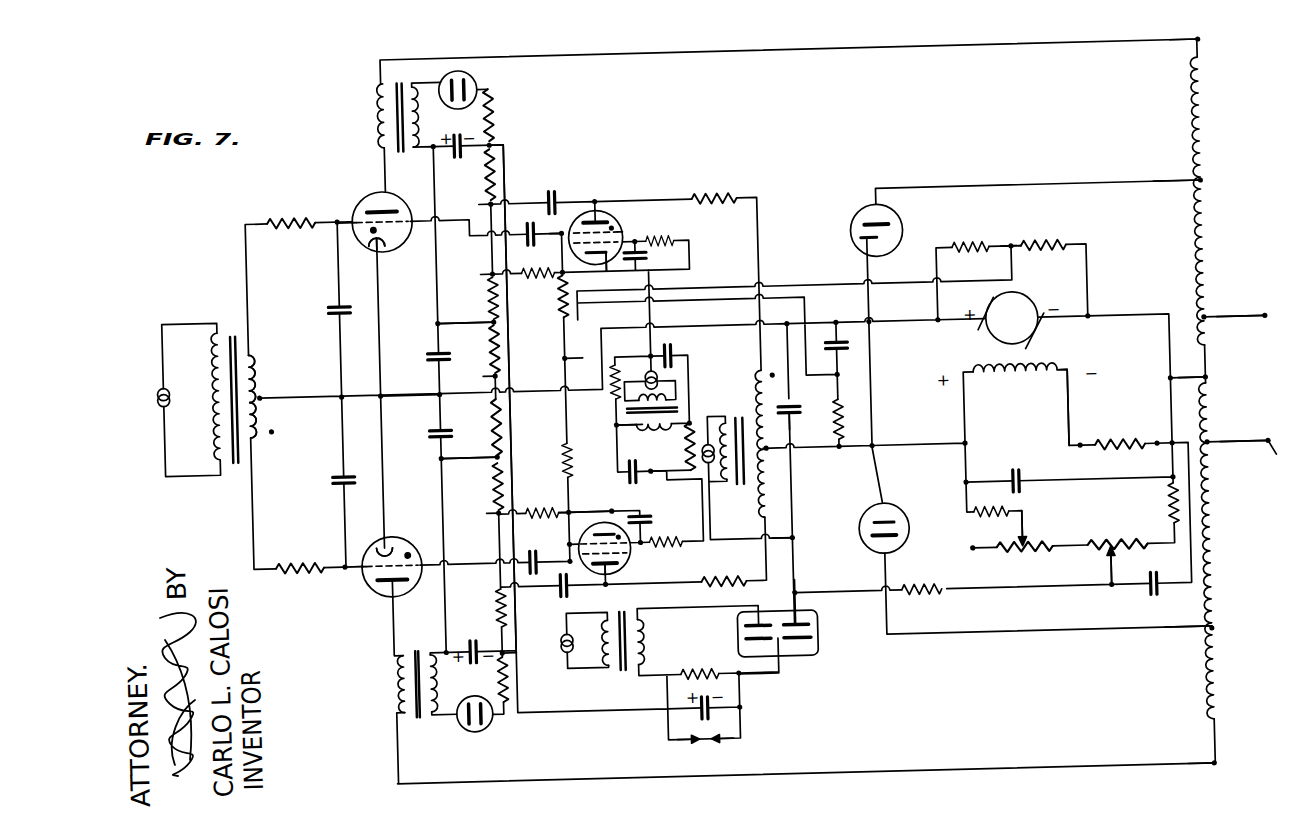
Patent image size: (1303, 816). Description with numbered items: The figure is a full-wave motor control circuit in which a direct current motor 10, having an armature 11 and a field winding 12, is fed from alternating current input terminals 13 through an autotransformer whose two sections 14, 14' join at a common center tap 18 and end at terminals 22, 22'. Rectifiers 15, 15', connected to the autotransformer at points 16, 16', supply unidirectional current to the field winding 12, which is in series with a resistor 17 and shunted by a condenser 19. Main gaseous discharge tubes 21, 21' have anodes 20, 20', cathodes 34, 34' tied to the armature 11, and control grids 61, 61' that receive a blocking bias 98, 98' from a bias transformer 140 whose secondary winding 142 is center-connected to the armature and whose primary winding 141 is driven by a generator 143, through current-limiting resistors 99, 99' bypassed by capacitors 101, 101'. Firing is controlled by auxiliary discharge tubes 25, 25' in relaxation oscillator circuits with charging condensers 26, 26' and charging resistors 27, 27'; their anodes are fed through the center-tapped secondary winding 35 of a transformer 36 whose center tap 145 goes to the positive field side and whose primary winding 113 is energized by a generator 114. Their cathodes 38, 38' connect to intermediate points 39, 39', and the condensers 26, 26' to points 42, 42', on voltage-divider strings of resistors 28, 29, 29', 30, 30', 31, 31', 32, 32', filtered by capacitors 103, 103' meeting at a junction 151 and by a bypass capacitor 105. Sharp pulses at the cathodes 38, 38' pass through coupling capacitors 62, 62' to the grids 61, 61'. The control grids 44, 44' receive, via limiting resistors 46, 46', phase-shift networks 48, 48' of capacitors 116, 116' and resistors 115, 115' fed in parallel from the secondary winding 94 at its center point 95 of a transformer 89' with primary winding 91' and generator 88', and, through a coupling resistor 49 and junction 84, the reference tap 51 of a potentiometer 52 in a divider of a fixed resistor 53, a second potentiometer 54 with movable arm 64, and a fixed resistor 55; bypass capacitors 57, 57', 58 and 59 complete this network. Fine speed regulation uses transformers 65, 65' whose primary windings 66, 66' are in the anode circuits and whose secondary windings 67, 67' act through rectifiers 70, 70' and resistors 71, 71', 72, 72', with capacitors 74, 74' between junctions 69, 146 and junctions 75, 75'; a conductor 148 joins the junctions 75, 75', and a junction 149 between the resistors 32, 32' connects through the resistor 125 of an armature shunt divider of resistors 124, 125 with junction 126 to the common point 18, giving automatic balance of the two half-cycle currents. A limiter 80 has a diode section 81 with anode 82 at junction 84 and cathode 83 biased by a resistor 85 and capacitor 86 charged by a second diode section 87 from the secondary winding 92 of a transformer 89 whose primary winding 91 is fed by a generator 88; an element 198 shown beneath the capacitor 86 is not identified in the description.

The direct current motor 10 is at (1053, 391).
The armature 11 is at (1010, 320).
The field winding 12 is at (1009, 393).
The input terminals 13 is at (1258, 336).
The autotransformer 14 is at (1227, 201).
The autotransformer 14' is at (1231, 550).
The current rectifier 15 is at (888, 208).
The current rectifier 15' is at (889, 517).
The autotransformer point 16 is at (1167, 165).
The autotransformer point 16' is at (1180, 651).
The resistor 17 is at (1100, 459).
The common end 18 is at (1200, 397).
The condenser 19 is at (1008, 490).
The anode 20 is at (380, 196).
The anode 20' is at (389, 583).
The main gaseous discharge tube 21 is at (335, 202).
The main gaseous discharge tube 21' is at (336, 598).
The high voltage terminal 22 is at (1172, 56).
The autotransformer end 22' is at (1221, 760).
The auxiliary gaseous discharge tube 25 is at (611, 216).
The auxiliary gaseous discharge tube 25' is at (621, 564).
The charging condenser 26 is at (572, 178).
The charging condenser 26' is at (546, 603).
The charging resistor 27 is at (713, 173).
The charging resistor 27' is at (747, 563).
The resistor 28 is at (833, 432).
The resistor 29 is at (543, 296).
The resistor 29' is at (544, 456).
The resistor 30 is at (538, 263).
The resistor 30' is at (541, 531).
The resistor 31 is at (472, 298).
The resistor 31' is at (478, 487).
The resistor 32 is at (473, 349).
The resistor 32' is at (473, 427).
The cathode 34 is at (389, 257).
The cathode 34' is at (401, 521).
The secondary winding 35 is at (783, 411).
The transformer 36 is at (755, 505).
The cathode 38 is at (613, 288).
The cathode 38' is at (609, 501).
The intermediate point 39 is at (568, 269).
The intermediate point 39' is at (547, 498).
The intermediate point 42 is at (468, 234).
The intermediate point 42' is at (478, 528).
The control grid 44 is at (639, 219).
The control grid 44' is at (592, 585).
The current-limiting resistor 46 is at (683, 231).
The current-limiting resistor 46' is at (683, 551).
The phase-shifting network 48 is at (710, 405).
The phase-shifting network 48' is at (633, 434).
The coupling resistor 49 is at (910, 607).
The reference voltage tap 51 is at (1096, 588).
The potentiometer 52 is at (1095, 560).
The fixed resistor 53 is at (980, 522).
The second potentiometer 54 is at (1013, 567).
The fixed resistor 55 is at (1160, 523).
The bypass capacitor 57 is at (673, 259).
The bypass capacitor 57' is at (689, 528).
The bypass capacitor 58 is at (1135, 610).
The bypass capacitor 59 is at (784, 425).
The control grid 61 is at (394, 244).
The control grid 61' is at (421, 536).
The coupling capacitor 62 is at (528, 214).
The coupling capacitor 62' is at (539, 581).
The movable arm 64 is at (1012, 536).
The transformer 65 is at (407, 92).
The transformer 65' is at (415, 694).
The primary winding 66 is at (350, 117).
The primary winding 66' is at (375, 685).
The secondary winding 67 is at (428, 116).
The secondary winding 67' is at (444, 683).
The junction point 69 is at (465, 308).
The rectifier 70 is at (472, 72).
The rectifier 70' is at (474, 723).
The resistor 71 is at (512, 106).
The resistor 71' is at (489, 680).
The resistor 72 is at (511, 174).
The resistor 72' is at (481, 601).
The capacitor 74 is at (452, 162).
The capacitor 74' is at (468, 640).
The junction point 75 is at (517, 127).
The junction point 75' is at (527, 676).
The limiter circuit 80 is at (787, 624).
The diode section 81 is at (799, 650).
The anode 82 is at (779, 603).
The cathode 83 is at (786, 652).
The junction 84 is at (783, 548).
The resistor 85 is at (699, 664).
The capacitor 86 is at (700, 723).
The second diode section 87 is at (733, 641).
The generator 88 is at (553, 651).
The generator 88' is at (641, 370).
The transformer 89 is at (617, 657).
The transformer 89' is at (639, 405).
The primary winding 91 is at (594, 656).
The primary winding 91' is at (680, 383).
The secondary winding 92 is at (632, 641).
The secondary winding 94 is at (646, 440).
The center point 95 is at (638, 438).
The bias source 98 is at (269, 363).
The bias source 98' is at (276, 435).
The current-limiting resistor 99 is at (279, 208).
The current-limiting resistor 99' is at (285, 585).
The bypass capacitor 101 is at (322, 296).
The bypass capacitor 101' is at (324, 490).
The filter capacitor 103 is at (425, 354).
The filter capacitor 103' is at (425, 431).
The bypass capacitor 105 is at (832, 357).
The primary winding 113 is at (716, 490).
The generator 114 is at (716, 430).
The resistor 115 is at (622, 363).
The resistor 115' is at (677, 488).
The capacitor 116 is at (687, 341).
The capacitor 116' is at (604, 480).
The resistor 124 is at (970, 258).
The resistor 125 is at (1045, 259).
The junction point 126 is at (1008, 258).
The transformer 140 is at (225, 330).
The primary winding 141 is at (206, 367).
The secondary winding 142 is at (253, 377).
The generator 143 is at (150, 388).
The center tap 145 is at (759, 462).
The junction point 146 is at (486, 460).
The conductor 148 is at (504, 440).
The junction point 149 is at (486, 380).
The junction point 151 is at (431, 395).
The adjustable contact 198 is at (693, 751).